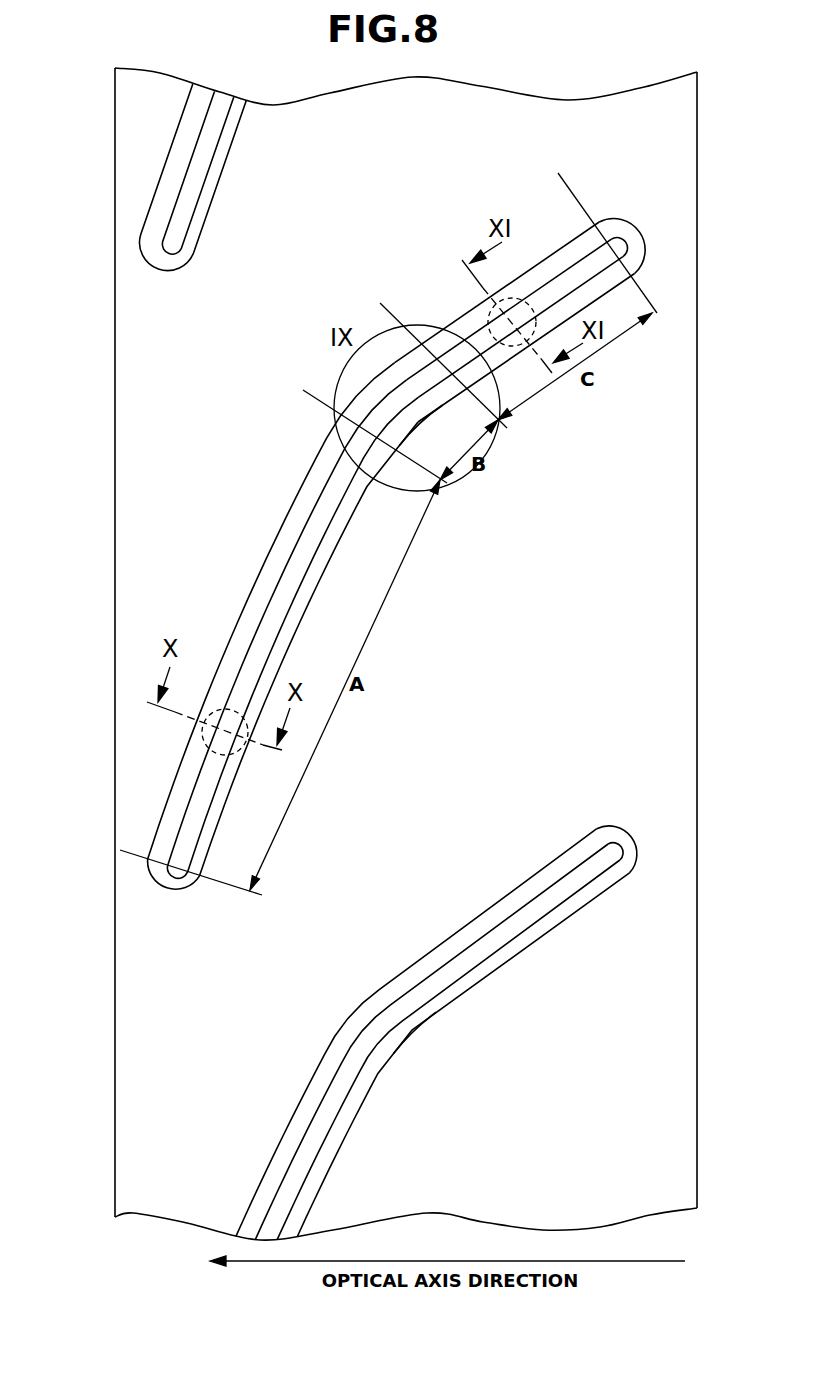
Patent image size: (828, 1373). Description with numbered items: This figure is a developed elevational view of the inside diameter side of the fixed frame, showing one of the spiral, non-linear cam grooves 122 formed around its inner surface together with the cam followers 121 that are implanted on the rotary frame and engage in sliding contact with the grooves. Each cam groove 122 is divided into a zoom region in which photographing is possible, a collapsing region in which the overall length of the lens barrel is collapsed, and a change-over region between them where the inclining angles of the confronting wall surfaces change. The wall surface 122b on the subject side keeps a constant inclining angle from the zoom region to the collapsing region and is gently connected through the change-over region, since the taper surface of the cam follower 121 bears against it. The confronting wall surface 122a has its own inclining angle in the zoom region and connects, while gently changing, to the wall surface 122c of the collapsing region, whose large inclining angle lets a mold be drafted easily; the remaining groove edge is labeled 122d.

The cam follower 121 is at (510, 298).
The cam groove 122 is at (372, 654).
The wall surface 122a is at (323, 557).
The wall surface on a subject side 122b is at (310, 494).
The wall surface 122c is at (593, 293).
The cam plate inner edge 122d is at (278, 607).